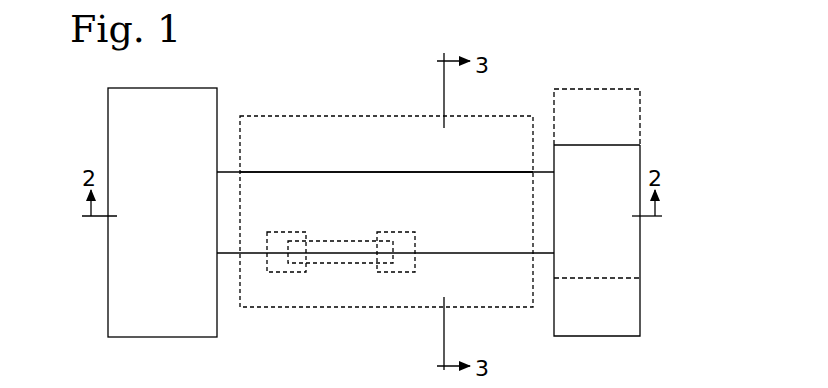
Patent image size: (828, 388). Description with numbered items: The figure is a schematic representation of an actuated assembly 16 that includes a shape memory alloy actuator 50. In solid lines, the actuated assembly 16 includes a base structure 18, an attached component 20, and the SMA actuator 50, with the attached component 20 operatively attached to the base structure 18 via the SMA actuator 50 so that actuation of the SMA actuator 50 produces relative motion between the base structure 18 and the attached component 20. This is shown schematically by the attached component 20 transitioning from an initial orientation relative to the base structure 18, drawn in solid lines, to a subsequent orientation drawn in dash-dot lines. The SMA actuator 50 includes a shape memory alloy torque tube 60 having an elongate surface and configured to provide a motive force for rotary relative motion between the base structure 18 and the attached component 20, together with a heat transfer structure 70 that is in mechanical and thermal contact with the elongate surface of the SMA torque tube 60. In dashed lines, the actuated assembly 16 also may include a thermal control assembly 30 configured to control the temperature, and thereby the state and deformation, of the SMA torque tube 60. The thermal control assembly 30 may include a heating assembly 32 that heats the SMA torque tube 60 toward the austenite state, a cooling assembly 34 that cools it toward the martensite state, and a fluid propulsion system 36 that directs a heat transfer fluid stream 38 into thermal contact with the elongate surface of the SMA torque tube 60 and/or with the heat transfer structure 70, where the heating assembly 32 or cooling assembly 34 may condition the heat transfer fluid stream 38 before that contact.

The actuated assembly 16 is at (556, 48).
The base structure 18 is at (176, 88).
The attached component 20 is at (641, 113).
The thermal control assembly 30 is at (362, 308).
The heating assembly 32 is at (279, 232).
The cooling assembly 34 is at (397, 232).
The fluid propulsion system 36 is at (340, 241).
The heat transfer fluid stream 38 is at (353, 293).
The shape memory alloy actuator 50 is at (500, 166).
The shape memory alloy torque tube 60 is at (325, 170).
The heat transfer structure 70 is at (392, 171).